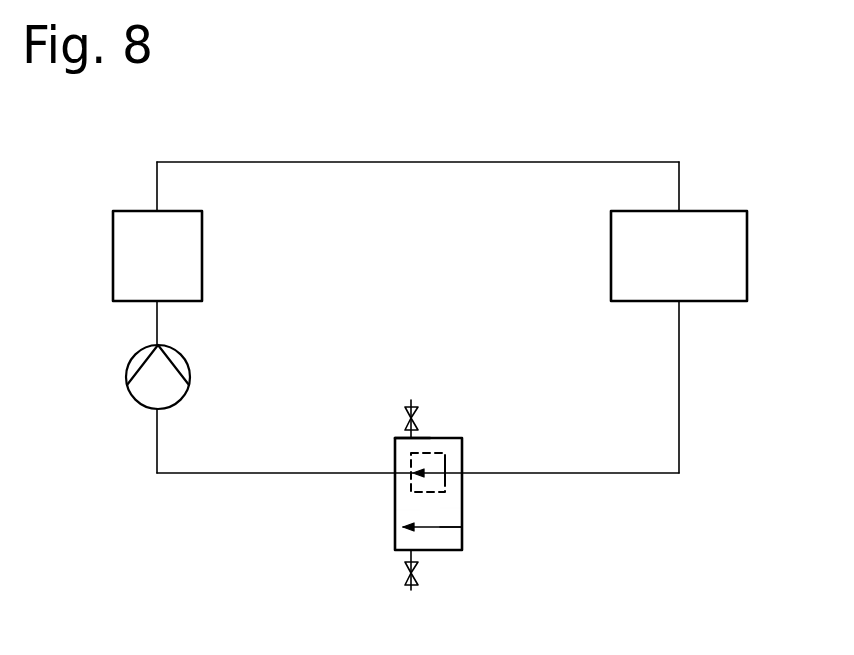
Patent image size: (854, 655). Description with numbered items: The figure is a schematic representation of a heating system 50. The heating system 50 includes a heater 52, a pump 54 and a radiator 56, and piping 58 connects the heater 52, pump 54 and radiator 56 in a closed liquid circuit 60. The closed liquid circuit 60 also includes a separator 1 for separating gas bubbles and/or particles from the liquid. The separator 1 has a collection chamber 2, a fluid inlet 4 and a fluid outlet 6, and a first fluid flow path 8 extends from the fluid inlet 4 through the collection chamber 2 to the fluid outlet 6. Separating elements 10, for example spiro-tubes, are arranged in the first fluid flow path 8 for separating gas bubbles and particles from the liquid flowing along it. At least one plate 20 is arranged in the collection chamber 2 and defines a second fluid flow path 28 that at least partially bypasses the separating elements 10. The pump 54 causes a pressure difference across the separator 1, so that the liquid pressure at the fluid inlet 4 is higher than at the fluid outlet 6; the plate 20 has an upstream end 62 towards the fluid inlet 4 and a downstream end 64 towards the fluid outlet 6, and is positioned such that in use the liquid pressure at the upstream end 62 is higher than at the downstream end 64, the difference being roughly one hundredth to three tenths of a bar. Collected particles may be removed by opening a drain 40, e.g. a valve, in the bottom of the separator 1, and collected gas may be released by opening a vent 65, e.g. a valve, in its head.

The heating system 50 is at (736, 140).
The heater 52 is at (140, 272).
The pump 54 is at (148, 391).
The radiator 56 is at (727, 242).
The piping 58 is at (422, 162).
The closed liquid circuit 60 is at (679, 392).
The separator 1 is at (455, 438).
The collection chamber 2 is at (397, 437).
The fluid inlet 4 is at (462, 468).
The fluid outlet 6 is at (395, 470).
The first fluid flow path 8 is at (440, 470).
The separating elements 10 is at (437, 453).
The plate 20 is at (410, 512).
The second fluid flow path 28 is at (442, 528).
The drain 40 is at (417, 588).
The upstream end 62 is at (442, 508).
The downstream end 64 is at (418, 510).
The vent 65 is at (412, 402).